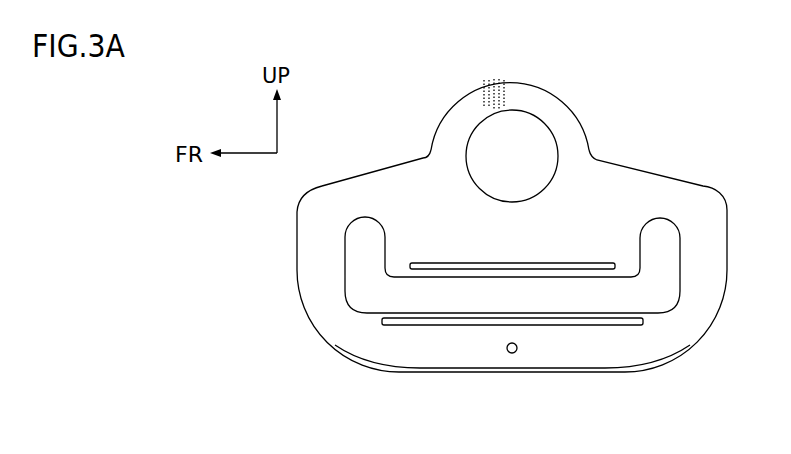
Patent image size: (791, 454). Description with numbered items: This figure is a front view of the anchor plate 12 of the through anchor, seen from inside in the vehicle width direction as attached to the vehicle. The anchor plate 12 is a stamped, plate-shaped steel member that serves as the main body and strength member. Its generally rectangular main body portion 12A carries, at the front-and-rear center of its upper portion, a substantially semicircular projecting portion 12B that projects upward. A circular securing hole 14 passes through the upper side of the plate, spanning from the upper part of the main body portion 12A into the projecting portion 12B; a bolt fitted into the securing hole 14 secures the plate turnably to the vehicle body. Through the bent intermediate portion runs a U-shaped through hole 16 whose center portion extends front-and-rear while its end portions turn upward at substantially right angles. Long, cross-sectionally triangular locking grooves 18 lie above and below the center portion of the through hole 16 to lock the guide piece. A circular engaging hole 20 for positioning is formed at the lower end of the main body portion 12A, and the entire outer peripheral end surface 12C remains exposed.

The anchor plate 12 is at (471, 235).
The main body portion 12A is at (297, 230).
The projecting portion 12B is at (566, 100).
The outer peripheral end surface 12C is at (597, 373).
The securing hole 14 is at (560, 123).
The through hole 16 is at (480, 288).
The locking grooves 18 is at (556, 267).
The engaging hole 20 is at (512, 354).